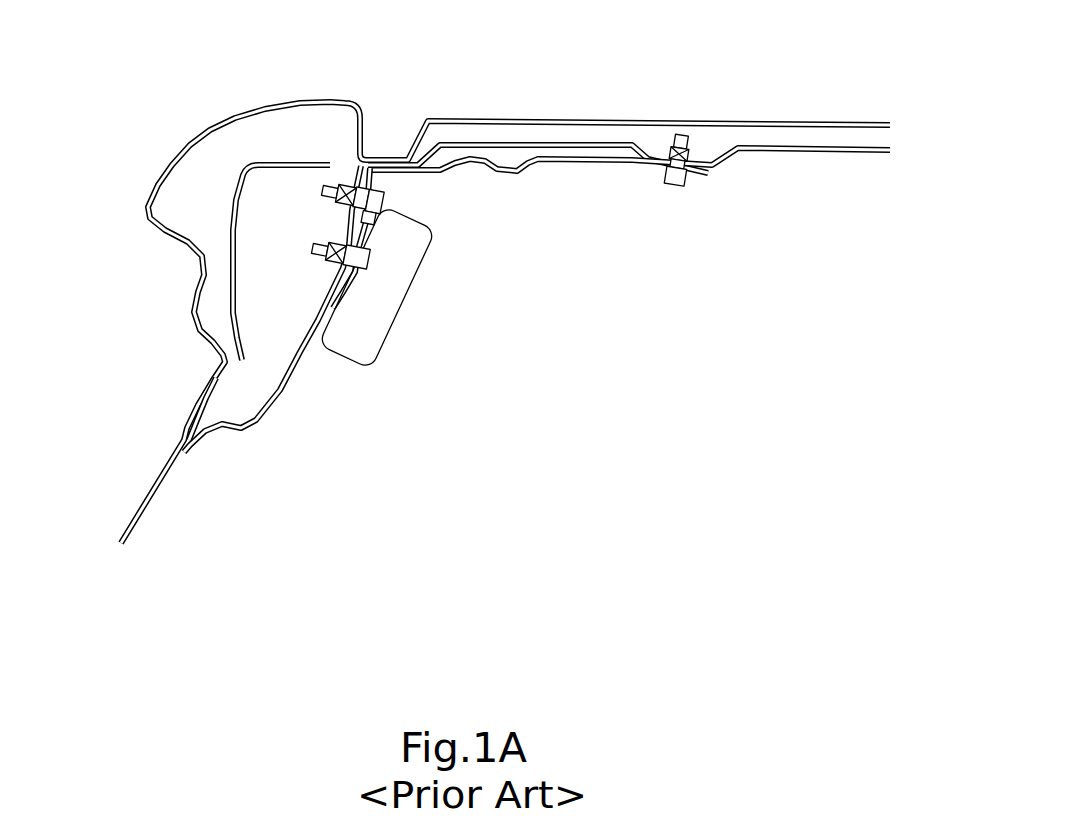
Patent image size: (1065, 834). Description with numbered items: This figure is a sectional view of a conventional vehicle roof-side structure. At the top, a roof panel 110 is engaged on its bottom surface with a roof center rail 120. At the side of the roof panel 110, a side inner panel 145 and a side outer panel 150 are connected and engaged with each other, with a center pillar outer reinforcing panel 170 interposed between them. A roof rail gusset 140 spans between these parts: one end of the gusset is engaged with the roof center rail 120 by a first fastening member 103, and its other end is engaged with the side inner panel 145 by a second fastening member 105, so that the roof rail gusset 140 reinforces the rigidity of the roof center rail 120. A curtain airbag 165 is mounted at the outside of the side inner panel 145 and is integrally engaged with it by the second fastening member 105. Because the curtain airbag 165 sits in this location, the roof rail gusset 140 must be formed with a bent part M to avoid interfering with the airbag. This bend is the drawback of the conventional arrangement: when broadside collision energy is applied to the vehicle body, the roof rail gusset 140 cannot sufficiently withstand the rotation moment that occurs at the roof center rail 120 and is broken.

The roof panel 110 is at (705, 117).
The roof center rail 120 is at (516, 146).
The roof rail gusset 140 is at (512, 172).
The side inner panel 145 is at (275, 403).
The side outer panel 150 is at (146, 208).
The center pillar outer reinforcing panel 170 is at (232, 280).
The curtain airbag 165 is at (373, 345).
The second fastening member 105 is at (384, 206).
The first fastening member 103 is at (368, 264).
The bent part of roof rail gusset M is at (372, 160).